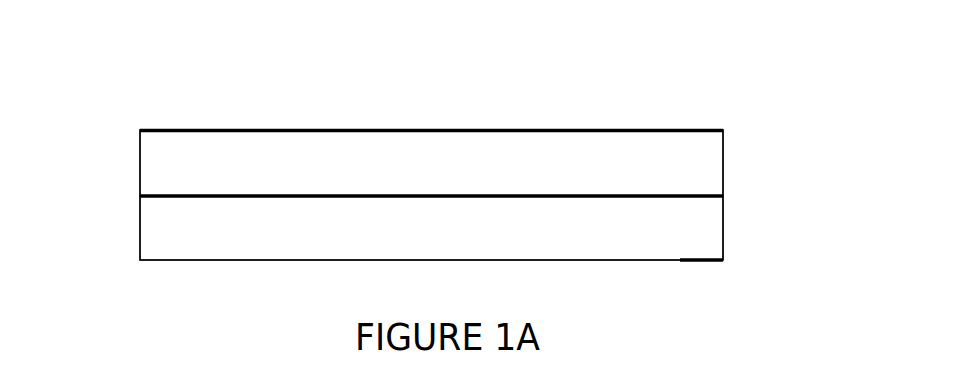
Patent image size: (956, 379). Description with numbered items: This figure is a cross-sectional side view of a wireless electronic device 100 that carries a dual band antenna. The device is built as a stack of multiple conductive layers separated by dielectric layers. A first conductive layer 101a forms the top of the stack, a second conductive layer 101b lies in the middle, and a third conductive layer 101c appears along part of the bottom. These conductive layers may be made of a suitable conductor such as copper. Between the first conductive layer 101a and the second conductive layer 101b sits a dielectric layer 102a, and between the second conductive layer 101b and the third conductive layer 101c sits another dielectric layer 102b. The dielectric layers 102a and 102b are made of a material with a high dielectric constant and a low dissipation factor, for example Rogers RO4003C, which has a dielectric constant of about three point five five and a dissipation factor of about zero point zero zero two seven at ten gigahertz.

The wireless electronic device 100 is at (166, 274).
The first conductive layer 101a is at (723, 131).
The second conductive layer 101b is at (723, 195).
The third conductive layer 101c is at (723, 260).
The dielectric layer 102a is at (163, 155).
The dielectric layer 102b is at (172, 238).